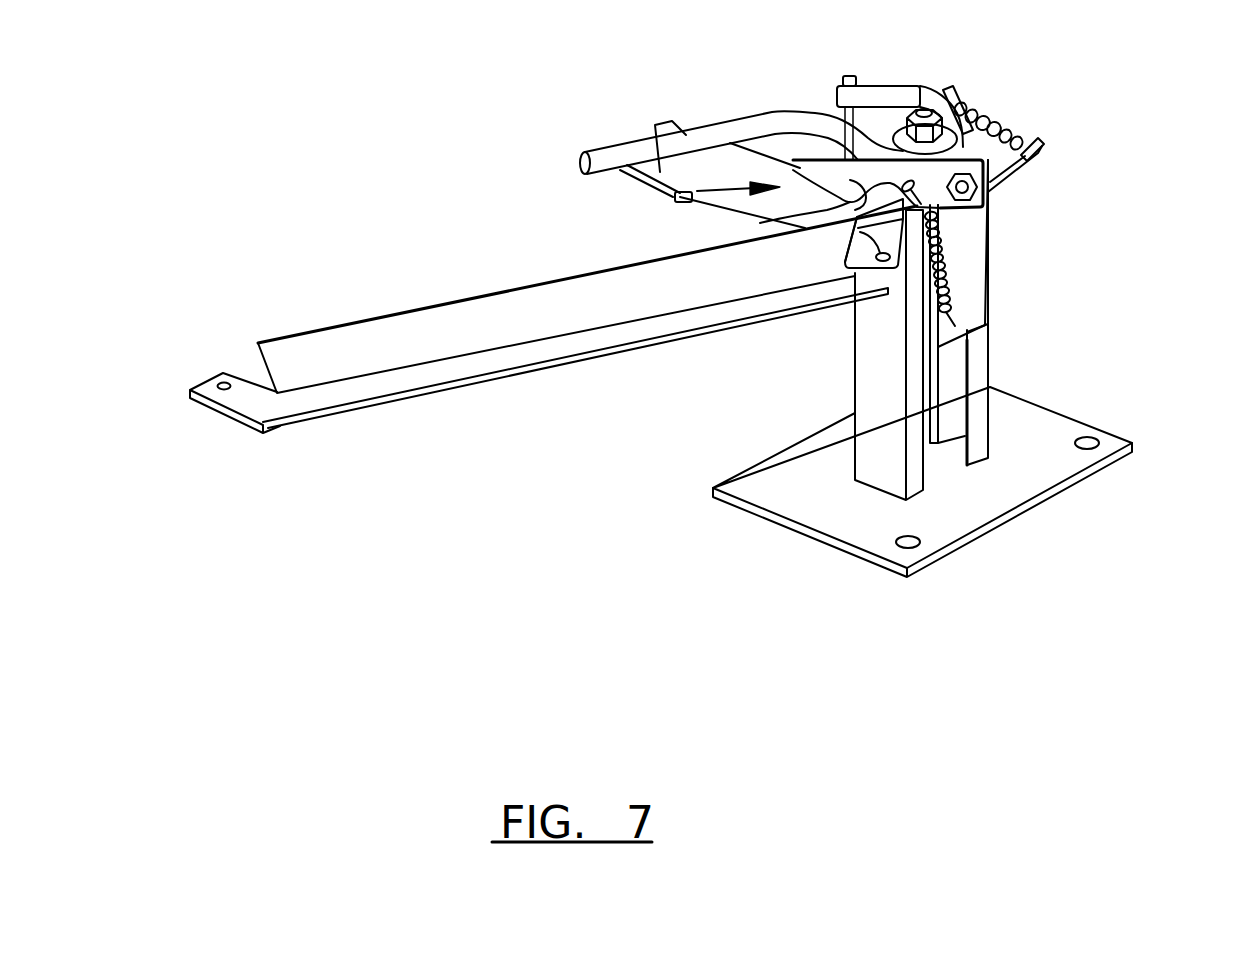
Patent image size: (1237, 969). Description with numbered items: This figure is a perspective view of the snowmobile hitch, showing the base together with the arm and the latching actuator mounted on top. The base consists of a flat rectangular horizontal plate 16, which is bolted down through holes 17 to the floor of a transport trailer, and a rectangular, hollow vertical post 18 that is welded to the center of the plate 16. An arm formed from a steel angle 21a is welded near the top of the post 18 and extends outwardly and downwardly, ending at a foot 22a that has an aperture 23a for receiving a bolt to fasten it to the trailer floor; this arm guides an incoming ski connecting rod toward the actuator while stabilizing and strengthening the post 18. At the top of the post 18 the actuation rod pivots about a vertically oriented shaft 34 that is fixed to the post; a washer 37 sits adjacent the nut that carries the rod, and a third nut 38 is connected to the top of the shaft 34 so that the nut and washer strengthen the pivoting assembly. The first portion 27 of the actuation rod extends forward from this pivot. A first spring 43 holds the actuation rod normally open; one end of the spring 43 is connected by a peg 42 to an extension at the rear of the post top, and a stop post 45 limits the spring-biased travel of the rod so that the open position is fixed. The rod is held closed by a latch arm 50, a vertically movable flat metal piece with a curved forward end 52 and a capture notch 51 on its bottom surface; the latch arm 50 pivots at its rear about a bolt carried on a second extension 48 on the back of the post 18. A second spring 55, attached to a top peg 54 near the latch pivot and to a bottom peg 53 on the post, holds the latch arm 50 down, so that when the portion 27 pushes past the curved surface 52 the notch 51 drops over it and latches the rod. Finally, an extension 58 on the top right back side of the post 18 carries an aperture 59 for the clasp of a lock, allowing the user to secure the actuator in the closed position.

The horizontal plate 16 is at (977, 512).
The mounting holes 17 is at (1110, 436).
The vertical post 18 is at (978, 367).
The steel angle 21a is at (395, 383).
The foot 22a is at (252, 398).
The aperture 23a is at (220, 379).
The first portion of the actuation rod 27 is at (632, 155).
The shaft 34 is at (923, 109).
The washer 37 is at (993, 120).
The third nut 38 is at (980, 108).
The peg 42 is at (1042, 143).
The first spring 43 is at (1028, 137).
The stop post 45 is at (850, 77).
The second extension 48 is at (962, 268).
The latch arm 50 is at (813, 172).
The capture notch 51 is at (810, 213).
The curved forward end 52 is at (670, 195).
The bottom peg 53 is at (987, 332).
The top peg 54 is at (953, 222).
The second spring 55 is at (927, 303).
The extension 58 is at (847, 253).
The aperture 59 is at (855, 233).